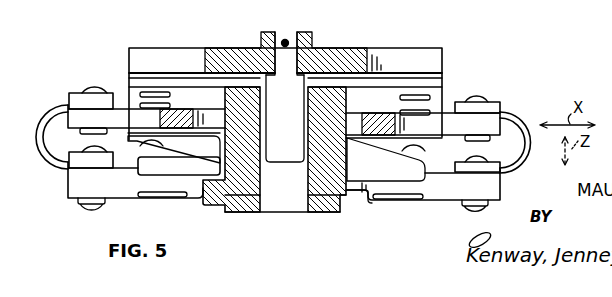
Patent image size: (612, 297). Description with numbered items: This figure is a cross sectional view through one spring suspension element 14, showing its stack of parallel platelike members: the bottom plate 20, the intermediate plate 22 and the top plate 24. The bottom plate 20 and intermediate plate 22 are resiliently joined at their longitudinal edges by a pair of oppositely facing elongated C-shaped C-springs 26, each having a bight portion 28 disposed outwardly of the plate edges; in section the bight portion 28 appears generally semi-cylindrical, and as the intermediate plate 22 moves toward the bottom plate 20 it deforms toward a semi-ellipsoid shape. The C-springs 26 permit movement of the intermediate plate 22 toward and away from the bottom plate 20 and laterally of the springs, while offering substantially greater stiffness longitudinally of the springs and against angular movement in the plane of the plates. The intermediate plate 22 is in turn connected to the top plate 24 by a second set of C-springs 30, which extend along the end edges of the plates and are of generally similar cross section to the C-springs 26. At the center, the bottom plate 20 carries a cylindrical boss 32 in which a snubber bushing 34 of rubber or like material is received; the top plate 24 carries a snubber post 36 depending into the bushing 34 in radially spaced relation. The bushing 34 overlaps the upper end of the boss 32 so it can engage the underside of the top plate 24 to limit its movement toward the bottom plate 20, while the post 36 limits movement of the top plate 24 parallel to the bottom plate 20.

The suspension element 14 is at (462, 43).
The bottom plate 20 is at (434, 205).
The intermediate plate 22 is at (117, 100).
The top plate 24 is at (216, 48).
The C-spring 26 is at (57, 88).
The bight portion 28 is at (38, 148).
The C-spring 30 is at (442, 93).
The cylindrical boss 32 is at (348, 165).
The snubber bushing 34 is at (322, 213).
The snubber post 36 is at (276, 163).